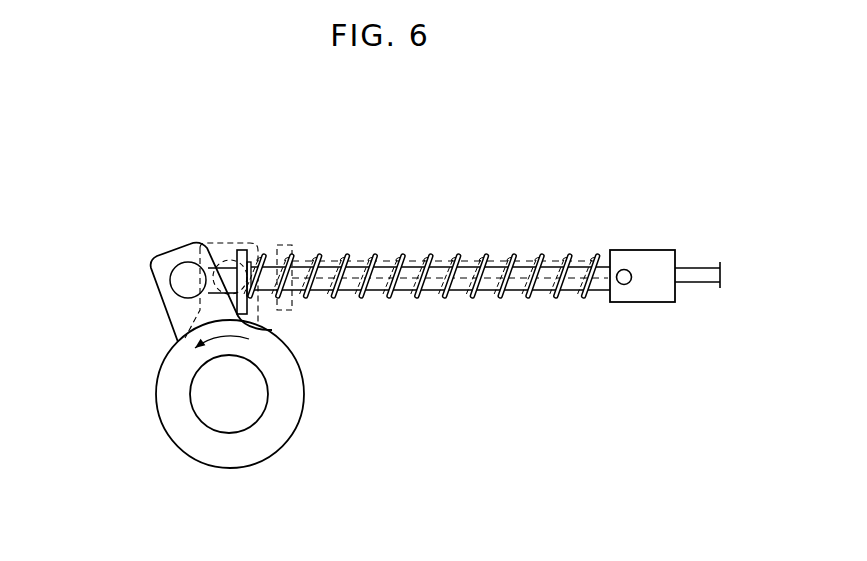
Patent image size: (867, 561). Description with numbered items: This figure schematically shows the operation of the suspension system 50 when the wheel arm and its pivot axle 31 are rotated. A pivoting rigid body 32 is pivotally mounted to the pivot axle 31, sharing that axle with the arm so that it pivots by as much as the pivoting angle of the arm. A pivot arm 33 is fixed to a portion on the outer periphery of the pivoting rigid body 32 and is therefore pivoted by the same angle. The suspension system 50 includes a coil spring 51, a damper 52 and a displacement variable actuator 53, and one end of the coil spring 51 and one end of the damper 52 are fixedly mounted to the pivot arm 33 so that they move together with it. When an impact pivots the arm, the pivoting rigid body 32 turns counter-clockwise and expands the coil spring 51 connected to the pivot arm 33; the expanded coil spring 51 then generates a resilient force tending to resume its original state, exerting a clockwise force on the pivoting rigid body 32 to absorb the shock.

The pivot axle 31 is at (215, 398).
The pivoting rigid body 32 is at (170, 378).
The pivot arm 33 is at (185, 278).
The suspension system 50 is at (482, 209).
The coil spring 51 is at (390, 262).
The damper 52 is at (425, 262).
The displacement variable actuator 53 is at (627, 231).